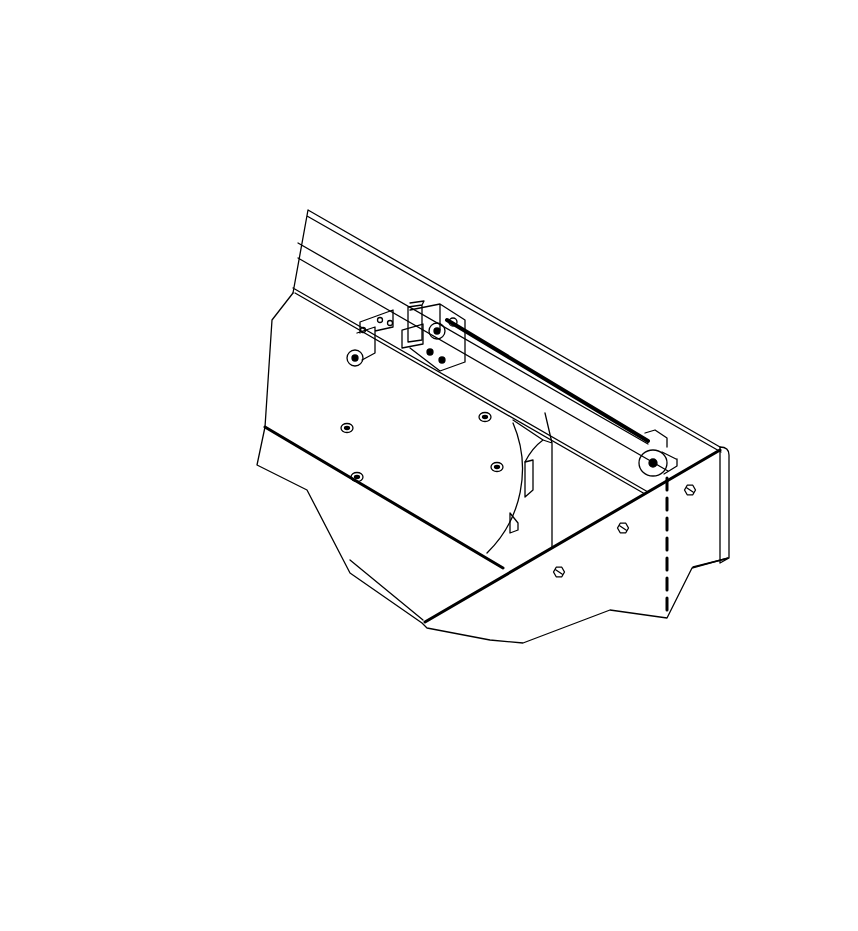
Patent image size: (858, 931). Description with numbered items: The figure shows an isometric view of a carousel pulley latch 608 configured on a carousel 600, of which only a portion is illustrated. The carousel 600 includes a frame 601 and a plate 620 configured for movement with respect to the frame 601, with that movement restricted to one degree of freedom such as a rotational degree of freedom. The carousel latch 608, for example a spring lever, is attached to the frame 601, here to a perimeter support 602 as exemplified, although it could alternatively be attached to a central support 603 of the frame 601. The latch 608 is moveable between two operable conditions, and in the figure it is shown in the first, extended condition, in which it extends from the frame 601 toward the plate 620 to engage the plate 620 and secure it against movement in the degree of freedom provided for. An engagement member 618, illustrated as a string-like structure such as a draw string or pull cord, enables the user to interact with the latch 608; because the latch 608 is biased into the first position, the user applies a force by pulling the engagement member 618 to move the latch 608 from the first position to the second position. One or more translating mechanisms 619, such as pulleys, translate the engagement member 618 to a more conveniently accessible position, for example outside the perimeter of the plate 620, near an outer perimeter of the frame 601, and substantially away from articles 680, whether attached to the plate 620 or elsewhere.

The carousel 600 is at (393, 129).
The frame 601 is at (720, 450).
The perimeter support 602 is at (588, 375).
The central support 603 is at (350, 513).
The carousel pulley latch 608 is at (420, 305).
The engagement member 618 is at (518, 363).
The translating mechanism 619 is at (656, 450).
The plate 620 is at (295, 388).
The articles 680 is at (540, 518).